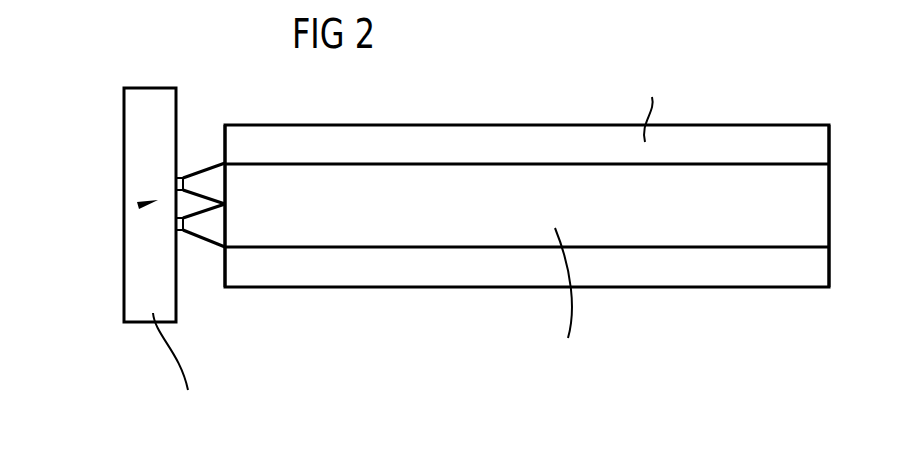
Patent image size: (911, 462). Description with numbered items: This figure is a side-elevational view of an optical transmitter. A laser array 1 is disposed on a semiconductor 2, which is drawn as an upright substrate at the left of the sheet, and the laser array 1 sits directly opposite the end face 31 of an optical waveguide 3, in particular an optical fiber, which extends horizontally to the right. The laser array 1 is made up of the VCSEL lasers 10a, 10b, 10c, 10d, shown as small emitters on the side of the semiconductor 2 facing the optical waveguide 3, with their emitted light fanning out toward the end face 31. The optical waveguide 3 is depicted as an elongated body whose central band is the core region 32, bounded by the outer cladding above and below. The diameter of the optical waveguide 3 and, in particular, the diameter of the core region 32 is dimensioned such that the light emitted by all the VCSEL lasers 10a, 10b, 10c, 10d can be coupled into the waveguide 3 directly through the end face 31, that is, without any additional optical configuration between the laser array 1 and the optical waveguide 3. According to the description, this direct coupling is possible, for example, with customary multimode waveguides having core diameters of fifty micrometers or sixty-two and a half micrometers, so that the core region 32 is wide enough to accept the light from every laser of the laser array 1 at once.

The laser array 1 is at (138, 205).
The semiconductor 2 is at (153, 88).
The optical waveguide 3 is at (504, 112).
The VCSEL laser 10a is at (127, 177).
The VCSEL laser 10b is at (176, 183).
The VCSEL laser 10c is at (127, 231).
The VCSEL laser 10d is at (176, 226).
The end face 31 is at (216, 262).
The core region 32 is at (820, 207).